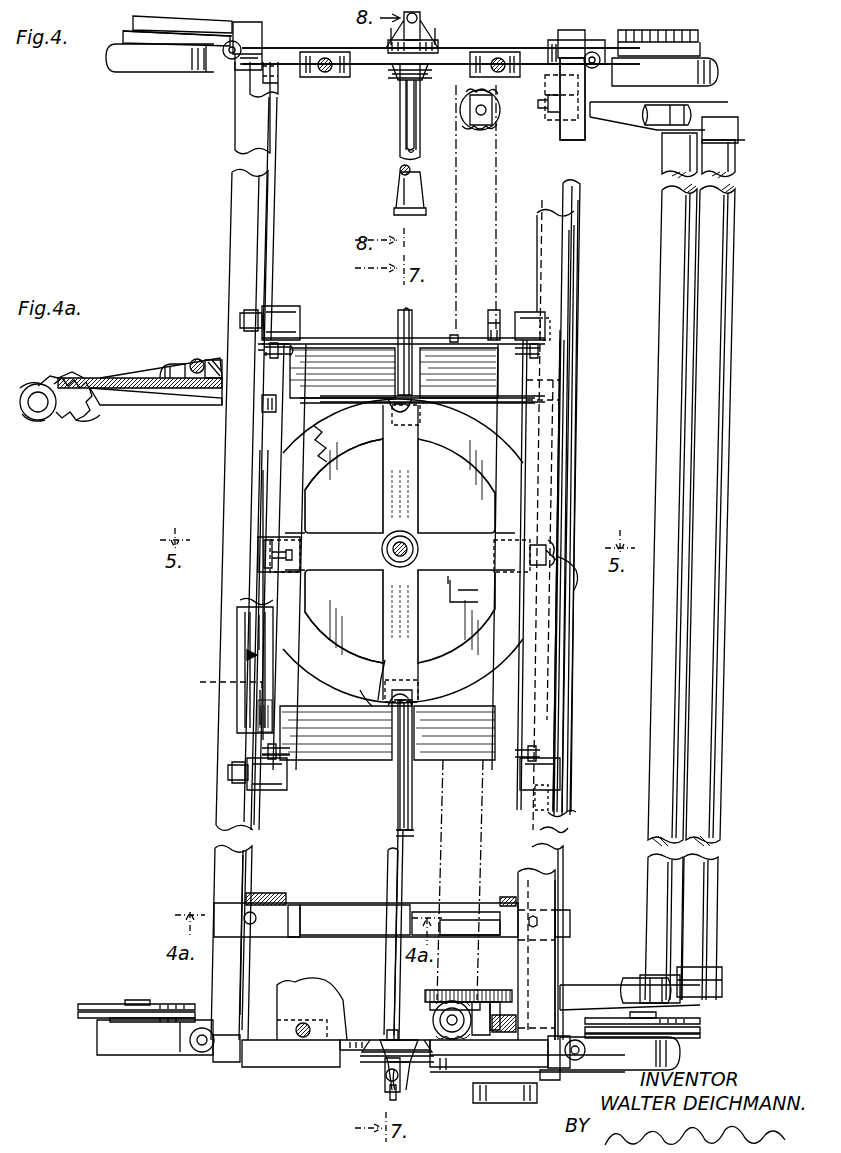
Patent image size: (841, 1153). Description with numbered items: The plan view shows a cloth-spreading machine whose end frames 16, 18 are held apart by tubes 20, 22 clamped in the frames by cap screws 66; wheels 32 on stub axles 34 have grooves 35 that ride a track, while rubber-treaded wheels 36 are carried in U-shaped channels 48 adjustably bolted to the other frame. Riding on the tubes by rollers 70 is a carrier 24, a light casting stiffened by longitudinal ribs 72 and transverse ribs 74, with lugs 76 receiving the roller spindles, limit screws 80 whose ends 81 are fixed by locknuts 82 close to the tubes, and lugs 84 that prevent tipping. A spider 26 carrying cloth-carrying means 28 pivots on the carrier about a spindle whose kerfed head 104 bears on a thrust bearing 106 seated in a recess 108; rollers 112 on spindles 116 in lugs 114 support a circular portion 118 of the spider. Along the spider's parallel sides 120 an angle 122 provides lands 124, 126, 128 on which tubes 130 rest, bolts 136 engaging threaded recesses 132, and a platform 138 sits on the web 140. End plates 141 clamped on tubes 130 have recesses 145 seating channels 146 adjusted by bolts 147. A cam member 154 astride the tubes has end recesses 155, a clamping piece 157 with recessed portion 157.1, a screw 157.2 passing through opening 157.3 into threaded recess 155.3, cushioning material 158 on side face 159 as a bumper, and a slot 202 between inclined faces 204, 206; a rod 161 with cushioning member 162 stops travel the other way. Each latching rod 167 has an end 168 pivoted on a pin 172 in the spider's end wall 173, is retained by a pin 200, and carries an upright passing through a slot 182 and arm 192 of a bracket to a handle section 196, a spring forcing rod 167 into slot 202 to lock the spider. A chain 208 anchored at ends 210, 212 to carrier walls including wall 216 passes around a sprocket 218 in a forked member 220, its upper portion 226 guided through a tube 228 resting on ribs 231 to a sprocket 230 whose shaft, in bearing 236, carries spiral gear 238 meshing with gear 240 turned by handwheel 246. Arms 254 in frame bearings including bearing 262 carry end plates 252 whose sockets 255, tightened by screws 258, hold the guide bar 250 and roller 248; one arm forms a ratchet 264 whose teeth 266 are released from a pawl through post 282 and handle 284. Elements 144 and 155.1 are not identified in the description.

In FIG. 4, the end frame 16 is at (690, 1060).
In FIG. 4, the end frame 18 is at (134, 22).
In FIG. 4, the tube 20 is at (563, 190).
In FIG. 4A, the tube 20 is at (70, 378).
In FIG. 4, the tube 22 is at (233, 186).
In FIG. 4, the carrier 24 is at (346, 326).
In FIG. 4, the spider 26 is at (247, 655).
In FIG. 4, the cloth-carrying means 28 is at (323, 52).
In FIG. 4, the wheel 32 is at (104, 1008).
In FIG. 4, the stub axle 34 is at (146, 994).
In FIG. 4, the groove 35 is at (78, 1008).
In FIG. 4, the wheel 36 is at (134, 68).
In FIG. 4, the channel 48 is at (174, 14).
In FIG. 4, the cap screw 66 is at (232, 62).
In FIG. 4, the roller 70 is at (256, 318).
In FIG. 4, the longitudinal rib 72 is at (288, 500).
In FIG. 4, the transverse rib 74 is at (396, 344).
In FIG. 4, the lug 76 is at (290, 306).
In FIG. 4, the screw 80 is at (292, 350).
In FIG. 4, the end 81 is at (262, 350).
In FIG. 4, the locknut 82 is at (282, 340).
In FIG. 4, the lug 84 is at (268, 404).
In FIG. 4, the kerfed head 104 is at (392, 546).
In FIG. 4, the thrust bearing 106 is at (403, 551).
In FIG. 4, the recess 108 is at (412, 538).
In FIG. 4, the roller 112 is at (424, 412).
In FIG. 4, the lug 114 is at (275, 538).
In FIG. 4, the spindle 116 is at (290, 552).
In FIG. 4, the circular portion 118 is at (478, 400).
In FIG. 4, the side 120 is at (276, 638).
In FIG. 4, the angle 122 is at (252, 624).
In FIG. 4, the land 124 is at (260, 714).
In FIG. 4, the land 126 is at (556, 538).
In FIG. 4, the land 128 is at (562, 386).
In FIG. 4, the tube 130 is at (265, 100).
In FIG. 4, the threaded recess 132 is at (562, 550).
In FIG. 4, the bolt 136 is at (578, 580).
In FIG. 4, the platform 138 is at (300, 982).
In FIG. 4, the web 140 is at (318, 642).
In FIG. 4, the end plate 141 is at (462, 50).
In FIG. 4, the end block 144 is at (566, 1100).
In FIG. 4, the recess 145 is at (392, 70).
In FIG. 4, the channel 146 is at (420, 44).
In FIG. 4, the bolt 147 is at (398, 1066).
In FIG. 4, the cam member 154 is at (452, 914).
In FIG. 4, the recess 155 is at (220, 906).
In FIG. 4A, the recess 155 is at (80, 376).
In FIG. 4, the cushioning material 158 is at (270, 893).
In FIG. 4, the side face 159 is at (308, 905).
In FIG. 4, the rod 161 is at (400, 168).
In FIG. 4, the cushioning member 162 is at (394, 204).
In FIG. 4, the rod 167 is at (408, 130).
In FIG. 4A, the rod 167 is at (200, 360).
In FIG. 4, the end 168 is at (428, 708).
In FIG. 4, the pin 172 is at (400, 396).
In FIG. 4, the end wall 173 is at (372, 712).
In FIG. 4, the slot 182 is at (432, 74).
In FIG. 4, the arm 192 is at (395, 1086).
In FIG. 4, the handle section 196 is at (418, 12).
In FIG. 4, the pin 200 is at (387, 1030).
In FIG. 4, the slot 202 is at (402, 912).
In FIG. 4A, the slot 202 is at (165, 366).
In FIG. 4, the face 204 is at (350, 908).
In FIG. 4A, the face 204 is at (146, 368).
In FIG. 4, the face 206 is at (440, 926).
In FIG. 4A, the face 206 is at (186, 358).
In FIG. 4, the chain 208 is at (456, 165).
In FIG. 4, the end 210 is at (414, 762).
In FIG. 4, the end 212 is at (456, 334).
In FIG. 4, the wall 216 is at (417, 372).
In FIG. 4, the sprocket 218 is at (540, 125).
In FIG. 4, the forked member 220 is at (468, 108).
In FIG. 4, the upper portion 226 is at (494, 268).
In FIG. 4, the tube 228 is at (494, 310).
In FIG. 4, the sprocket 230 is at (434, 1020).
In FIG. 4, the rib 231 is at (400, 552).
In FIG. 4, the bearing 236 is at (478, 1004).
In FIG. 4, the spiral gear 238 is at (494, 1002).
In FIG. 4, the spiral gear 240 is at (508, 1020).
In FIG. 4, the handwheel 246 is at (506, 1102).
In FIG. 4, the roller 248 is at (738, 190).
In FIG. 4, the bar 250 is at (664, 196).
In FIG. 4, the end plate 252 is at (720, 117).
In FIG. 4, the arm 254 is at (625, 112).
In FIG. 4, the socket 255 is at (650, 975).
In FIG. 4, the screw 258 is at (680, 104).
In FIG. 4, the bearing 262 is at (555, 68).
In FIG. 4, the arcuate ratchet 264 is at (432, 992).
In FIG. 4, the teeth 266 is at (437, 1003).
In FIG. 4, the post 282 is at (446, 1074).
In FIG. 4, the handle 284 is at (550, 1082).
In FIG. 4A, the bar portion 155.1 is at (46, 380).
In FIG. 4A, the threaded recess 155.3 is at (72, 378).
In FIG. 4A, the separate piece 157 is at (58, 432).
In FIG. 4A, the recessed portion 157.1 is at (46, 424).
In FIG. 4A, the screw 157.2 is at (92, 398).
In FIG. 4A, the opening 157.3 is at (98, 416).